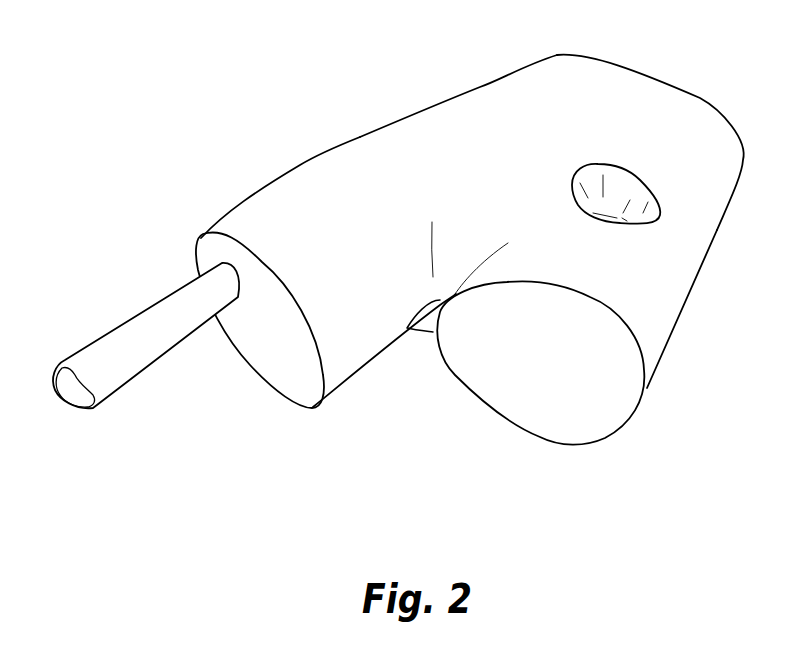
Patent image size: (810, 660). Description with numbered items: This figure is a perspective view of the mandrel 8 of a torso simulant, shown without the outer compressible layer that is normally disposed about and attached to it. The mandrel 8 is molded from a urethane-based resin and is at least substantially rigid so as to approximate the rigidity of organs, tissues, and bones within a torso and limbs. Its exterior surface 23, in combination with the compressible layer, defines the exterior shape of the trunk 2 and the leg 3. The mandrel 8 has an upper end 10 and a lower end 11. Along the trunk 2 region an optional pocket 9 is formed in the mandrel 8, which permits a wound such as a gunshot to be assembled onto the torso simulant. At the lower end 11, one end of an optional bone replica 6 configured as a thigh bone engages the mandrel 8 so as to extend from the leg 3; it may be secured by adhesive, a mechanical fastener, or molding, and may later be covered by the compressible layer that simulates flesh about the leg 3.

The trunk 2 is at (688, 218).
The leg 3 is at (285, 220).
The bone replica 6 is at (140, 335).
The mandrel 8 is at (430, 138).
The pocket 9 is at (623, 188).
The upper end 10 is at (660, 79).
The lower end 11 is at (457, 360).
The exterior surface 23 is at (652, 295).